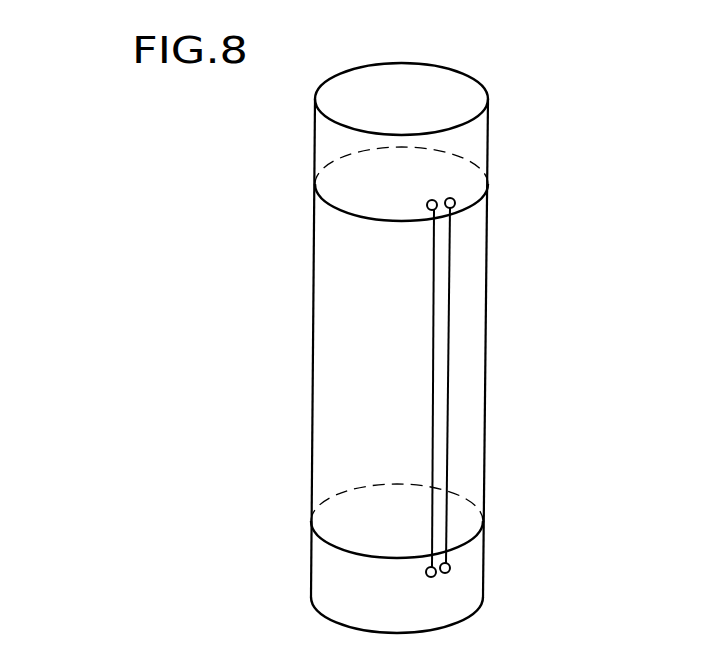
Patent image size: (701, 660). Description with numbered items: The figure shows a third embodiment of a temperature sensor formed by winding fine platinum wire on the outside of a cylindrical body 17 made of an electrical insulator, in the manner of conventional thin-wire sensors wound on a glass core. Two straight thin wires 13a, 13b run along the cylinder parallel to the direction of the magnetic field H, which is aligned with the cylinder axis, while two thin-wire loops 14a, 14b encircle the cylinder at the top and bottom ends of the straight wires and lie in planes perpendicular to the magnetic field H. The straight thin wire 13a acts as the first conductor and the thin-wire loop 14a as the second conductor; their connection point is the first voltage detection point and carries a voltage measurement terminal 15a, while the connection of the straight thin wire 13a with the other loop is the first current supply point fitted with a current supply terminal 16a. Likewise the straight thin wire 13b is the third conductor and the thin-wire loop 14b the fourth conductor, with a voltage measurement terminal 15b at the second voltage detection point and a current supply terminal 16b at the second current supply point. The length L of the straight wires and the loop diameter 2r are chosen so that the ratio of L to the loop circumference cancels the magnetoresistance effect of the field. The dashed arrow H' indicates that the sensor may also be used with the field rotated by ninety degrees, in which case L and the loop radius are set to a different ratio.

The straight thin wire 13a is at (433, 352).
The straight thin wire 13b is at (448, 323).
The thin-wire loop 14a is at (352, 215).
The thin-wire loop 14b is at (325, 550).
The voltage measurement terminal 15a is at (427, 201).
The voltage measurement terminal 15b is at (450, 569).
The current supply terminal 16a is at (426, 574).
The current supply terminal 16b is at (454, 199).
The cylindrical body 17 is at (313, 420).
The diameter of the thin-wire loops 2r is at (486, 122).
The length of the straight thin wires L is at (460, 218).
The magnetic field H is at (228, 373).
The magnetic field direction rotated by 90 degrees H' is at (157, 183).